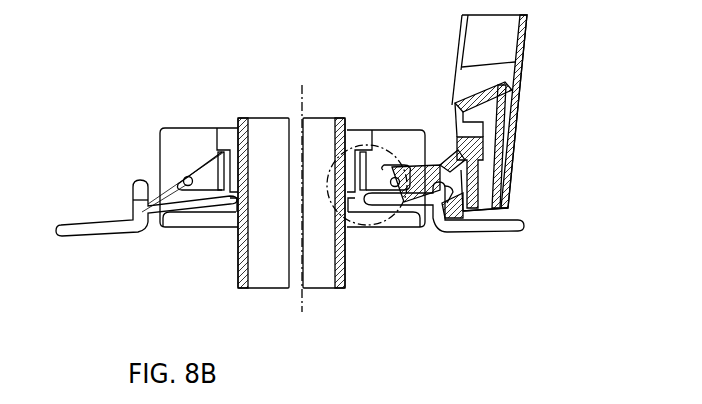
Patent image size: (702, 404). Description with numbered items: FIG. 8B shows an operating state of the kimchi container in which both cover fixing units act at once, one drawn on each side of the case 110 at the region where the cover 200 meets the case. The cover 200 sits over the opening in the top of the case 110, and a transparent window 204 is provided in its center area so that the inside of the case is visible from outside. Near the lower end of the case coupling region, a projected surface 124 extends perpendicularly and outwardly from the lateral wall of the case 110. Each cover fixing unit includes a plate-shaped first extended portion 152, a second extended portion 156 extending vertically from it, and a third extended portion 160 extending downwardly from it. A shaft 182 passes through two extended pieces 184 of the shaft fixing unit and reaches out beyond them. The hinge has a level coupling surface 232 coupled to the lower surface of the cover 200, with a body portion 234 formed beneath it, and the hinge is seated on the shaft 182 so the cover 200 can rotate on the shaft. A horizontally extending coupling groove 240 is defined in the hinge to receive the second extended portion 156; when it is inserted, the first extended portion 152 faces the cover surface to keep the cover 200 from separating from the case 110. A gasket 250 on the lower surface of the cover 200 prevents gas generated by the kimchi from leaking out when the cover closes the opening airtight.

The case 110 is at (238, 283).
The projected surface 124 is at (230, 226).
The first extended portion 152 is at (76, 238).
The second extended portion 156 is at (140, 222).
The third extended portion 160 is at (166, 228).
The shaft 182 is at (190, 214).
The extended pieces 184 is at (206, 226).
The cover 200 is at (510, 206).
The transparent window 204 is at (528, 17).
The coupling surface 232 is at (462, 219).
The body portion 234 is at (418, 165).
The coupling groove 240 is at (448, 160).
The gasket 250 is at (484, 131).